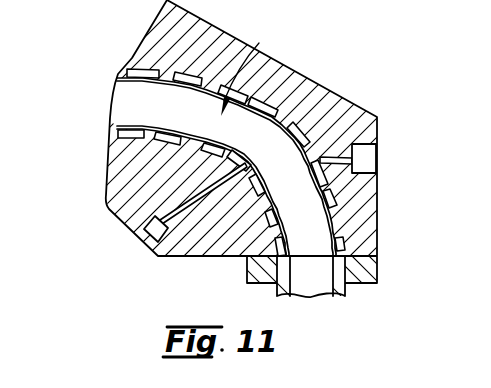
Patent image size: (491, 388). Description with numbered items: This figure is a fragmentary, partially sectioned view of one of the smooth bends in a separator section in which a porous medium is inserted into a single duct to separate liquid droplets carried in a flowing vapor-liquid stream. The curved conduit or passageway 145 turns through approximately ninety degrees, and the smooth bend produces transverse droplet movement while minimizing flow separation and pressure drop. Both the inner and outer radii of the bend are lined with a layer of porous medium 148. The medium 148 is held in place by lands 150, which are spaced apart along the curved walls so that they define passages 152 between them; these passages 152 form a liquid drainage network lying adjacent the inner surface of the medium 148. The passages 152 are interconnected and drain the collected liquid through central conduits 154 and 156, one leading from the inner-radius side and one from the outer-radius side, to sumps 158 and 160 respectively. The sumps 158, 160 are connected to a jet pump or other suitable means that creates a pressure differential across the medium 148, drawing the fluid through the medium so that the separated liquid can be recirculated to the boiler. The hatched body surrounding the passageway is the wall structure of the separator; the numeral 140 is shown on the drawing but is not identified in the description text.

The elbow housing 140 is at (152, 28).
The conduit or passageway 145 is at (259, 69).
The porous medium 148 is at (150, 84).
The lands 150 is at (285, 120).
The passages 152 is at (168, 134).
The central conduit 154 is at (182, 212).
The central conduit 156 is at (330, 166).
The sump 158 is at (147, 234).
The sump 160 is at (369, 156).